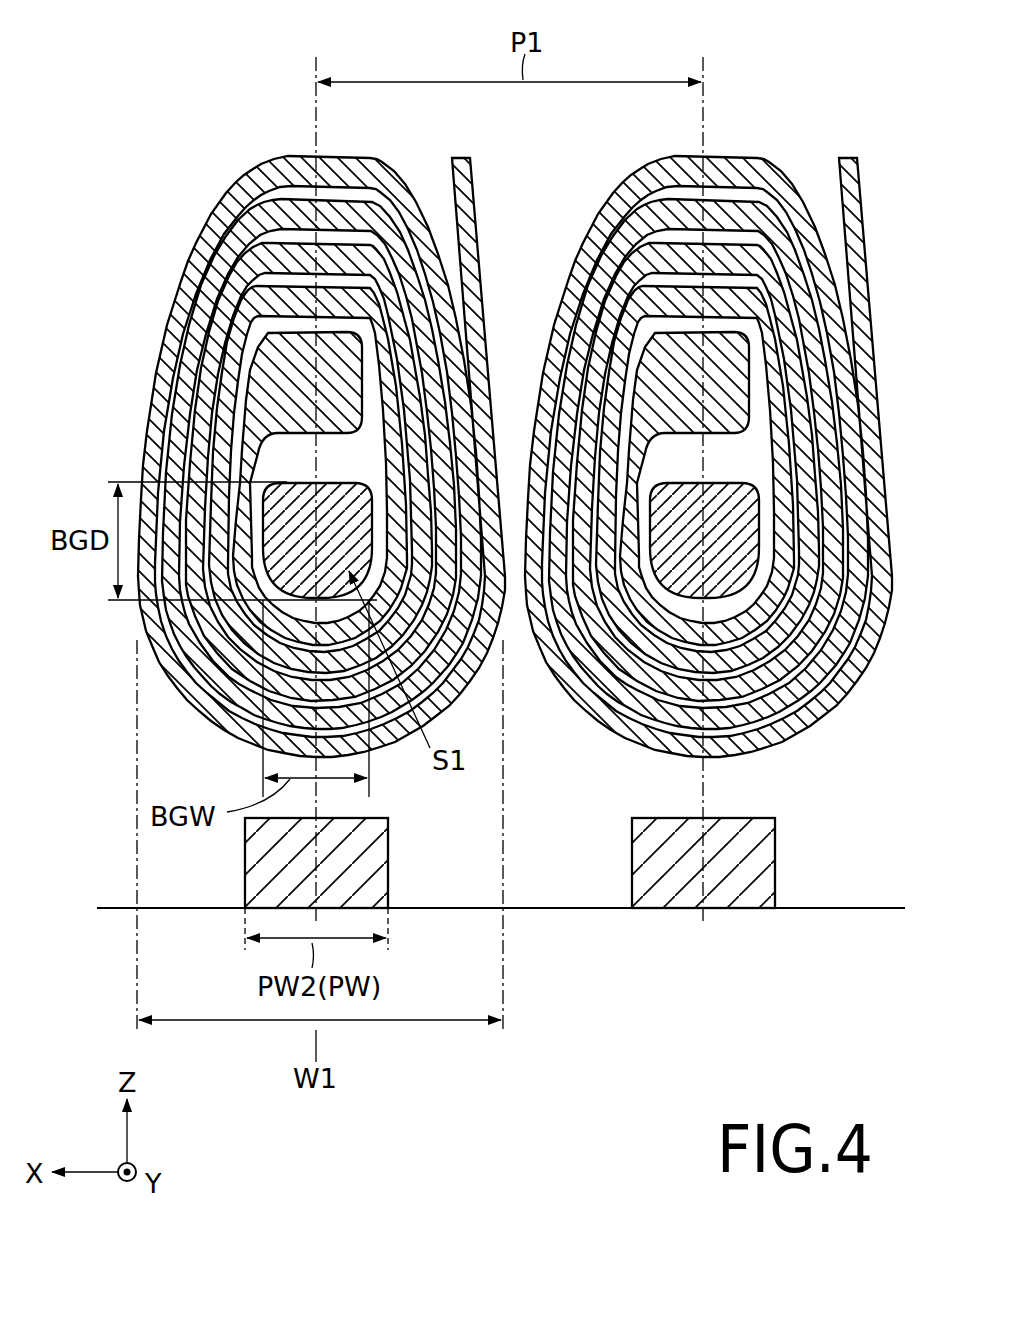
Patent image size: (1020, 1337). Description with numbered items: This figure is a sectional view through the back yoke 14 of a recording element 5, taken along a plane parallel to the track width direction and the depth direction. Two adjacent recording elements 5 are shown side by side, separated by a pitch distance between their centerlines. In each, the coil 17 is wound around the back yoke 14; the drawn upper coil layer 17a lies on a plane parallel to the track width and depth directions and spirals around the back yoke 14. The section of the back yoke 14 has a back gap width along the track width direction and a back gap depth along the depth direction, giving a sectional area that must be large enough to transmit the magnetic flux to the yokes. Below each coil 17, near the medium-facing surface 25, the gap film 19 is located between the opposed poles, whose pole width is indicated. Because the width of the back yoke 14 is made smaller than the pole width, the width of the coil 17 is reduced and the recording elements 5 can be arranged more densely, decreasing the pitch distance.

The recording element 5 is at (497, 422).
The back yoke 14 is at (332, 484).
The coil 17 is at (515, 422).
The upper coil layer 17a is at (350, 173).
The gap film 19 is at (257, 872).
The medium-facing surface 25 is at (177, 910).